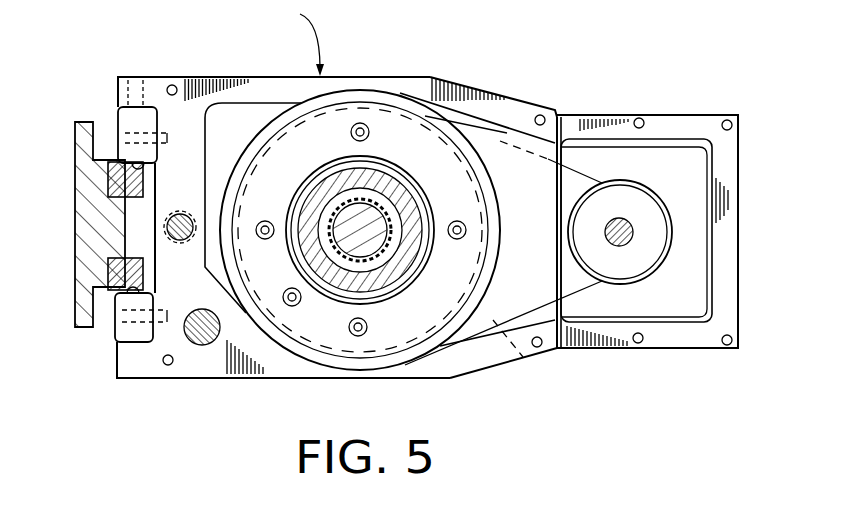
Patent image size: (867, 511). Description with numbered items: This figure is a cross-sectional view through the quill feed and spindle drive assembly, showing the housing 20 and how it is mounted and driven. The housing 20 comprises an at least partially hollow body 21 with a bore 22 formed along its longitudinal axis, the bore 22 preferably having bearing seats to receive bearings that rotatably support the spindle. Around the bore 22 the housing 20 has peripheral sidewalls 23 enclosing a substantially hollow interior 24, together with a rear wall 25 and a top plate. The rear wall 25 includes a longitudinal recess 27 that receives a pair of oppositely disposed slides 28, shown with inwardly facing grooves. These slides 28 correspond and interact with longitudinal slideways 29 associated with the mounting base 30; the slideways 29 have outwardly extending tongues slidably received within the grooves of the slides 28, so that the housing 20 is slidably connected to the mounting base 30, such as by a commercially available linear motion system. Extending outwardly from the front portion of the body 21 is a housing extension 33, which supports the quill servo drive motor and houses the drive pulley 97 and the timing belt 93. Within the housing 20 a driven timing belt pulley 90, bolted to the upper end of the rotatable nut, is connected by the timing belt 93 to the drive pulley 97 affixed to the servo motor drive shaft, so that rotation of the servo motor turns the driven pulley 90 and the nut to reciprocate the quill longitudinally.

The housing 20 is at (295, 38).
The body 21 is at (226, 74).
The bore 22 is at (352, 367).
The peripheral sidewalls 23 is at (396, 82).
The hollow interior 24 is at (500, 132).
The rear wall 25 is at (191, 176).
The longitudinal recess 27 is at (122, 336).
The slides 28 is at (118, 110).
The longitudinal slideways 29 is at (115, 185).
The mounting base 30 is at (90, 250).
The housing extension 33 is at (750, 168).
The driven timing belt pulley 90 is at (312, 327).
The timing belt 93 is at (523, 357).
The drive pulley 97 is at (640, 203).